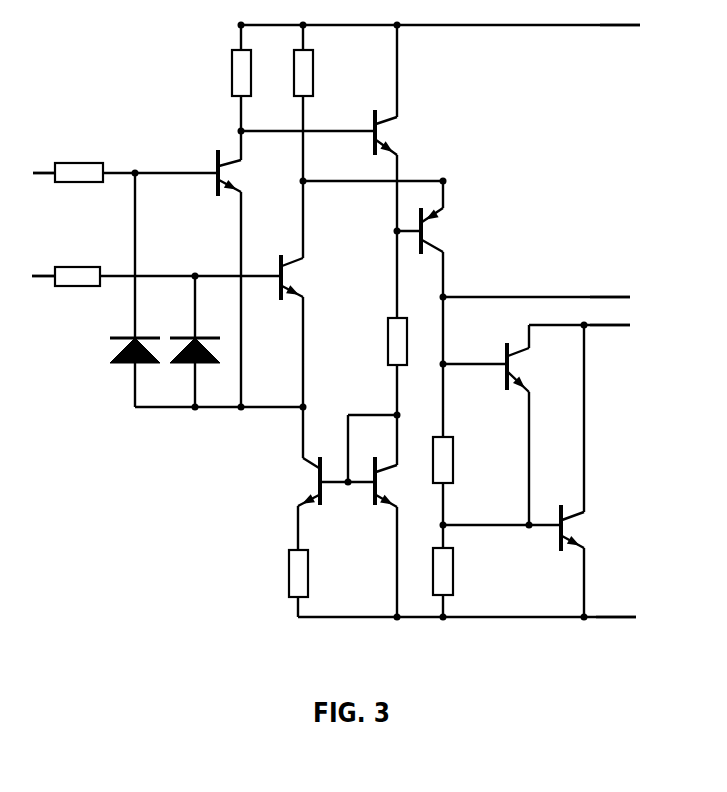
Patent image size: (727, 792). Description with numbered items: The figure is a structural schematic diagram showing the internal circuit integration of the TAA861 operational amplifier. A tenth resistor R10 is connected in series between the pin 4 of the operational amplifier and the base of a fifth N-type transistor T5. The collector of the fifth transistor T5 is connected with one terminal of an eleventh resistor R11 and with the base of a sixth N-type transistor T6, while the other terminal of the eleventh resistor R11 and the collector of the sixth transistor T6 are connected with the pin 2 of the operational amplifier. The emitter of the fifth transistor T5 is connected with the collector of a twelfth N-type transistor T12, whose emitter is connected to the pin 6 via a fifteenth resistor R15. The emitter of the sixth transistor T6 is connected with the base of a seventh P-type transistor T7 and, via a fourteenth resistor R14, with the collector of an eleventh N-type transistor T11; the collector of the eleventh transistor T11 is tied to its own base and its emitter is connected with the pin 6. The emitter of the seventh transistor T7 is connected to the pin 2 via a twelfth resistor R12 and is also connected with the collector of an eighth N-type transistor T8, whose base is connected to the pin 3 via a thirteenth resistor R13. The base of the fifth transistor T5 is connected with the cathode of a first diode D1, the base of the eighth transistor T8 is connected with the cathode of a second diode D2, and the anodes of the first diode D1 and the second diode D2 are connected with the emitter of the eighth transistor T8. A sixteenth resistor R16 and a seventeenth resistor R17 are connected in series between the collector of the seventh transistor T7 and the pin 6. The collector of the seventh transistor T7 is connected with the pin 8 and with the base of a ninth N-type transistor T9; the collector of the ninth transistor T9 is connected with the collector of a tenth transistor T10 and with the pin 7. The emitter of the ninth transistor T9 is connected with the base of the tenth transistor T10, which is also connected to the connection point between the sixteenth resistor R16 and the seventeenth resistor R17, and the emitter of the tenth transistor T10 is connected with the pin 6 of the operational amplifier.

The tenth resistor R10 is at (79, 149).
The eleventh resistor R11 is at (221, 76).
The twelfth resistor R12 is at (322, 76).
The thirteenth resistor R13 is at (77, 253).
The fourteenth resistor R14 is at (377, 342).
The fifteenth resistor R15 is at (316, 574).
The sixteenth resistor R16 is at (462, 460).
The seventeenth resistor R17 is at (462, 576).
The first diode D1 is at (126, 334).
The second diode D2 is at (202, 334).
The fifth N-type transistor T5 is at (247, 169).
The sixth N-type transistor T6 is at (406, 131).
The seventh P-type transistor T7 is at (453, 228).
The eighth N-type transistor T8 is at (313, 277).
The ninth N-type transistor T9 is at (537, 367).
The tenth transistor T10 is at (596, 528).
The eleventh N-type transistor T11 is at (404, 483).
The twelfth N-type transistor T12 is at (326, 501).
The pin 2 of the operational amplifier 2 is at (620, 38).
The pin 3 of the operational amplifier 3 is at (38, 267).
The pin 4 of the operational amplifier 4 is at (39, 162).
The pin 6 of the operational amplifier 6 is at (621, 605).
The pin 7 of the operational amplifier 7 is at (612, 339).
The pin 8 of the operational amplifier 8 is at (610, 284).